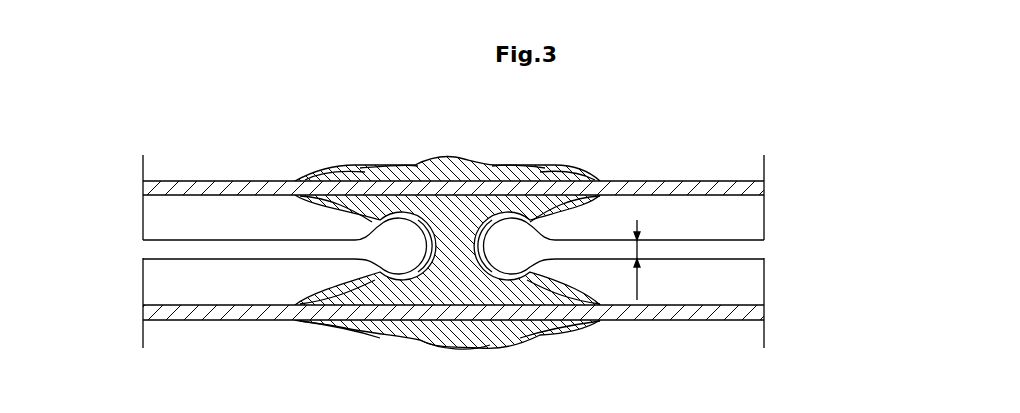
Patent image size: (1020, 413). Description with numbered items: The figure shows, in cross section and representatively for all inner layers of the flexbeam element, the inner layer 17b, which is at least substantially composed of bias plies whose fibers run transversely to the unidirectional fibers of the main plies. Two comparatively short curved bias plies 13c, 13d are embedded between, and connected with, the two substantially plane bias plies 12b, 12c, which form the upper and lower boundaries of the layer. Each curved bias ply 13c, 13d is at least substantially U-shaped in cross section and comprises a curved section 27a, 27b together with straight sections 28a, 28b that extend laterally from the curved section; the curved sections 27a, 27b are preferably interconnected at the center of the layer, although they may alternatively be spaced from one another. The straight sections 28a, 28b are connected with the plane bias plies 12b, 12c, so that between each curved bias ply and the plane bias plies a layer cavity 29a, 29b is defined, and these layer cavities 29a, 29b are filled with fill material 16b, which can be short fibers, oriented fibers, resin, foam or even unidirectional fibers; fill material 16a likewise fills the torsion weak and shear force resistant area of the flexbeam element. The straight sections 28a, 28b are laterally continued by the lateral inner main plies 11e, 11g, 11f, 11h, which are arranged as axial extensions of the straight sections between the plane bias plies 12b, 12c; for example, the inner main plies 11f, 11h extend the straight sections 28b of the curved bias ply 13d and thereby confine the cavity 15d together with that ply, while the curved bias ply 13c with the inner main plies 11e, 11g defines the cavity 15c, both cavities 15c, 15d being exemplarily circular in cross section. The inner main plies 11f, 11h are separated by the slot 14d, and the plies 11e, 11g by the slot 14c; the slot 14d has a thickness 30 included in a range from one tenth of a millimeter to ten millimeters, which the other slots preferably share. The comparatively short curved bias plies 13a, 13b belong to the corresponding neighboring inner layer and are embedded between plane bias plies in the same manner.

The lateral inner main ply 11e is at (173, 220).
The lateral inner main ply 11f is at (737, 212).
The lateral inner main ply 11g is at (178, 288).
The lateral inner main ply 11h is at (700, 290).
The plane bias ply 12b is at (168, 180).
The plane bias ply 12c is at (280, 313).
The curved bias ply 13a is at (373, 162).
The curved bias ply 13b is at (518, 163).
The curved bias ply 13c is at (308, 210).
The curved bias ply 13d is at (590, 222).
The slot 14c is at (165, 249).
The slot 14d is at (742, 250).
The cavity 15c is at (410, 260).
The cavity 15d is at (526, 256).
The fill material 16a is at (447, 164).
The fill material 16b is at (473, 337).
The inner layer 17b is at (195, 116).
The curved section 27a is at (413, 342).
The curved section 27b is at (575, 322).
The straight section 28a is at (292, 196).
The straight section 28b is at (575, 210).
The layer cavity 29a is at (421, 222).
The layer cavity 29b is at (484, 288).
The thickness 30 is at (652, 261).